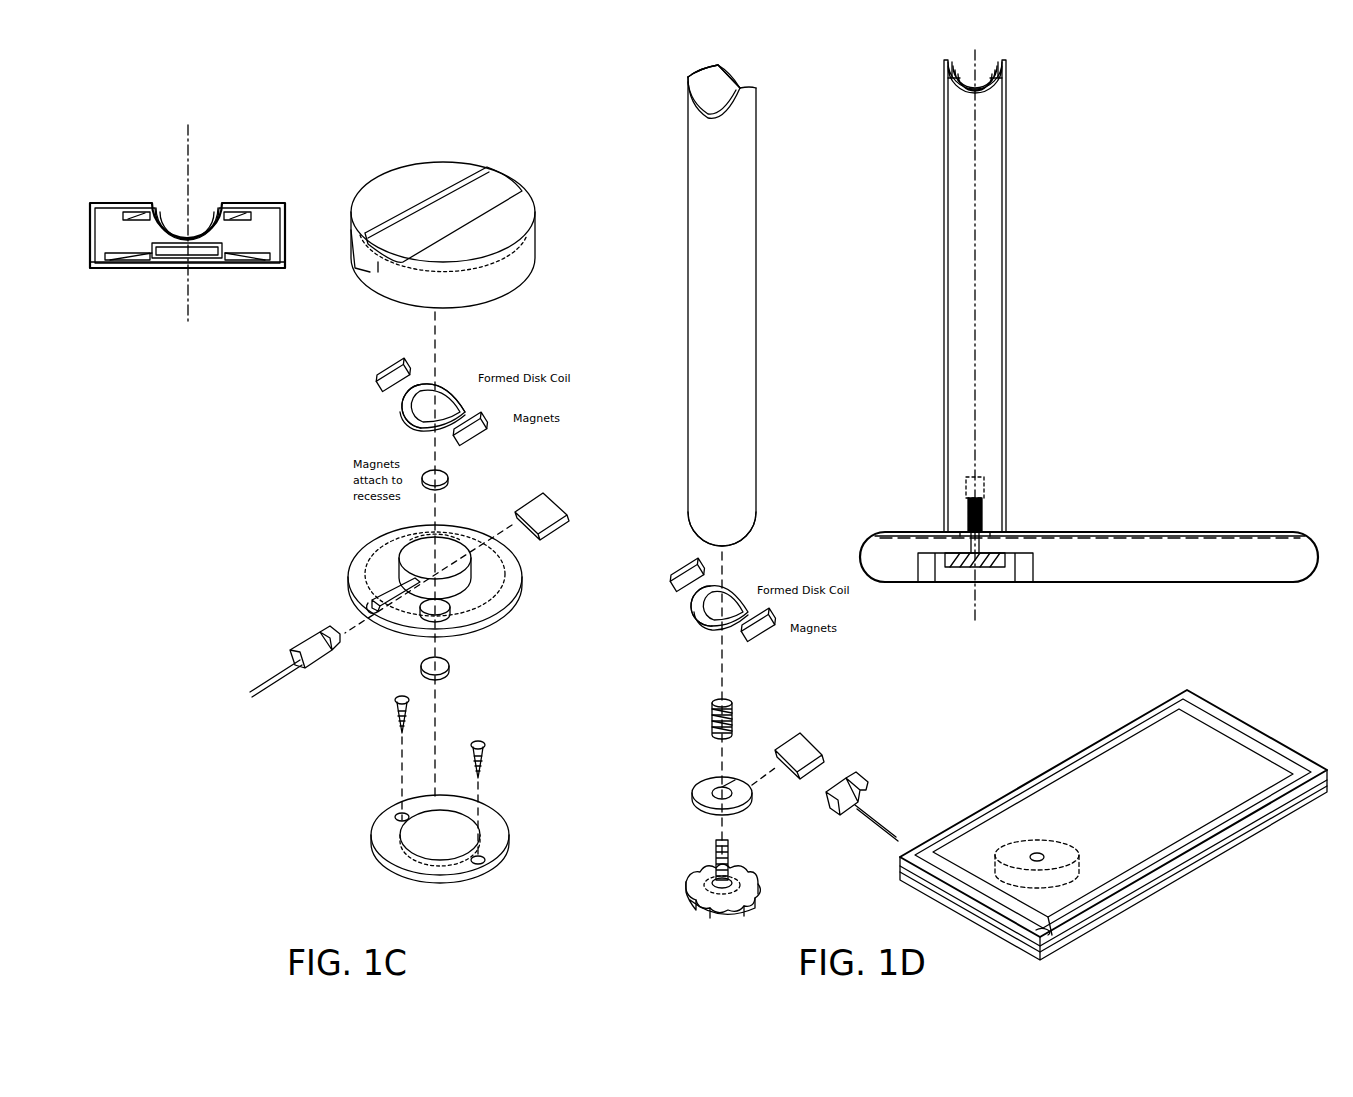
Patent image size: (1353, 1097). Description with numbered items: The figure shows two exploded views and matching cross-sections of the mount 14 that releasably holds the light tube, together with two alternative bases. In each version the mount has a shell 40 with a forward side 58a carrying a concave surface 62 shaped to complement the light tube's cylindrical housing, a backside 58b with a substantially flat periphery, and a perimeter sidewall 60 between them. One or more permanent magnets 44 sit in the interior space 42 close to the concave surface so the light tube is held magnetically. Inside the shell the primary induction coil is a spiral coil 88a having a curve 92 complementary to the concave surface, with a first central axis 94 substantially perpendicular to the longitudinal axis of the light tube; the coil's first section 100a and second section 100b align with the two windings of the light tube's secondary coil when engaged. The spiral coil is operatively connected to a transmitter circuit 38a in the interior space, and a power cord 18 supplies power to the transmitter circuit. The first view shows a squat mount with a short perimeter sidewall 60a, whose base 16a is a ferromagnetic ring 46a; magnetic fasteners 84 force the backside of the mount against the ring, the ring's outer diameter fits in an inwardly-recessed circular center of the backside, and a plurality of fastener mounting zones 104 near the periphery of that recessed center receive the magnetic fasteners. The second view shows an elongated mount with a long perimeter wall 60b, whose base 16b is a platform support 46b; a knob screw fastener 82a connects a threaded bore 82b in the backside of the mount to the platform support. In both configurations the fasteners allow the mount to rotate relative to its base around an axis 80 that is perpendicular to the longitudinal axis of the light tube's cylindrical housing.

In FIG. 1C, the mount 14 is at (477, 185).
In FIG. 1D, the mount 14 is at (920, 335).
In FIG. 1C, the base 16a is at (240, 268).
In FIG. 1D, the base 16b is at (1245, 548).
In FIG. 1C, the power cord 18 is at (282, 668).
In FIG. 1D, the power cord 18 is at (845, 800).
In FIG. 1C, the transmitter circuit 38a is at (538, 510).
In FIG. 1D, the transmitter circuit 38a is at (800, 745).
In FIG. 1C, the shell 40 is at (420, 190).
In FIG. 1D, the shell 40 is at (990, 184).
In FIG. 1C, the interior space 42 is at (258, 226).
In FIG. 1C, the permanent magnets 44 is at (395, 418).
In FIG. 1D, the permanent magnets 44 is at (675, 592).
In FIG. 1C, the ferromagnetic ring 46a is at (495, 838).
In FIG. 1D, the platform support 46b is at (1070, 566).
In FIG. 1C, the forward side 58a is at (123, 203).
In FIG. 1D, the forward side 58a is at (688, 76).
In FIG. 1C, the backside 58b is at (100, 272).
In FIG. 1D, the backside 58b is at (750, 530).
In FIG. 1C, the perimeter sidewall 60 is at (88, 228).
In FIG. 1C, the short perimeter sidewall 60a is at (520, 262).
In FIG. 1D, the long perimeter wall 60b is at (697, 243).
In FIG. 1C, the concave surface 62 is at (490, 190).
In FIG. 1D, the concave surface 62 is at (952, 86).
In FIG. 1D, the axis 80 is at (978, 258).
In FIG. 1D, the knob screw fastener 82a is at (716, 846).
In FIG. 1D, the threaded bore 82b is at (980, 478).
In FIG. 1C, the magnetic fasteners 84 is at (450, 665).
In FIG. 1C, the spiral coil 88a is at (458, 404).
In FIG. 1C, the curve 92 is at (166, 216).
In FIG. 1D, the curve 92 is at (990, 90).
In FIG. 1C, the first central axis 94 is at (189, 162).
In FIG. 1C, the first section 100a is at (400, 430).
In FIG. 1D, the first section 100a is at (700, 628).
In FIG. 1C, the second section 100b is at (448, 398).
In FIG. 1D, the second section 100b is at (733, 594).
In FIG. 1C, the fastener mounting zones 104 is at (474, 859).